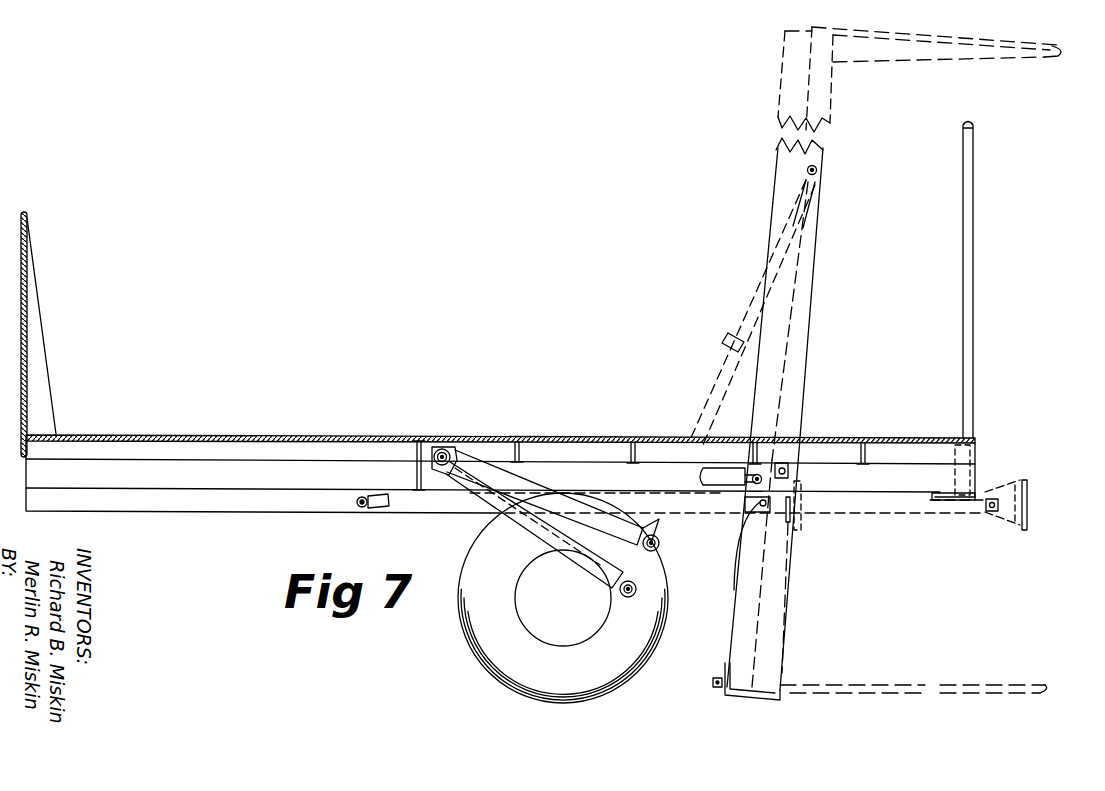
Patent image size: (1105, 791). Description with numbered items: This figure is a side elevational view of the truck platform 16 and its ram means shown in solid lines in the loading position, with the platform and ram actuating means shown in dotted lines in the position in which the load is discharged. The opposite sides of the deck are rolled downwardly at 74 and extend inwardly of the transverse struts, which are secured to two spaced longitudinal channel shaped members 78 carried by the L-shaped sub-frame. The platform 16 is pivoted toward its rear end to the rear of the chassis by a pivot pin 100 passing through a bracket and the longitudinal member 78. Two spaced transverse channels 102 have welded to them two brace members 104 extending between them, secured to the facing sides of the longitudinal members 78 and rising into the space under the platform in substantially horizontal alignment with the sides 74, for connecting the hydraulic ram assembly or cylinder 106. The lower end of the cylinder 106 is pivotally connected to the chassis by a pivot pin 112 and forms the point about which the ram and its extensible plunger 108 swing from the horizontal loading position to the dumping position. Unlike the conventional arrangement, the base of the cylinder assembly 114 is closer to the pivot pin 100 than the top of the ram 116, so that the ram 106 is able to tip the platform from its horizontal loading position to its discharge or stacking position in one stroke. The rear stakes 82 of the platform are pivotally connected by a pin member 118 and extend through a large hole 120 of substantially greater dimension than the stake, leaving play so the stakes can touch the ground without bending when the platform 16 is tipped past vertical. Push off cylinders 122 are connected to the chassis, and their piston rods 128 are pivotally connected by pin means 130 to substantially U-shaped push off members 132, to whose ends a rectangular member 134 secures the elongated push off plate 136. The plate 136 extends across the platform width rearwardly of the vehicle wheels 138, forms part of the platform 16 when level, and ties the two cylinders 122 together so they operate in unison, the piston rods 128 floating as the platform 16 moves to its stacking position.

The platform 16 is at (822, 224).
The rolled-down sides of the deck 74 is at (588, 438).
The longitudinal channel shaped members 78 is at (608, 476).
The rear stakes 82 is at (974, 226).
The pivot pin 100 is at (796, 446).
The transverse channels 102 is at (428, 437).
The brace members 104 is at (488, 445).
The hydraulic ram assembly 106 is at (572, 476).
The extensible plunger 108 is at (758, 285).
The pivot pin 112 is at (612, 600).
The base of the cylinder assembly 114 is at (646, 523).
The top of the ram 116 is at (497, 470).
The pin member 118 is at (976, 494).
The large hole 120 is at (978, 458).
The push off cylinders 122 is at (712, 432).
The piston rod 128 is at (735, 553).
The pin means 130 is at (738, 585).
The push off members 132 is at (791, 538).
The rectangular member 134 is at (798, 442).
The push off plate 136 is at (1028, 520).
The vehicle wheels 138 is at (666, 628).